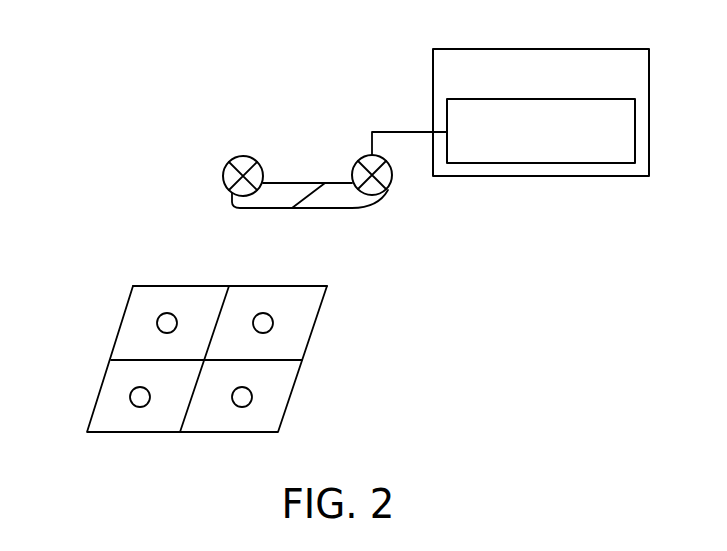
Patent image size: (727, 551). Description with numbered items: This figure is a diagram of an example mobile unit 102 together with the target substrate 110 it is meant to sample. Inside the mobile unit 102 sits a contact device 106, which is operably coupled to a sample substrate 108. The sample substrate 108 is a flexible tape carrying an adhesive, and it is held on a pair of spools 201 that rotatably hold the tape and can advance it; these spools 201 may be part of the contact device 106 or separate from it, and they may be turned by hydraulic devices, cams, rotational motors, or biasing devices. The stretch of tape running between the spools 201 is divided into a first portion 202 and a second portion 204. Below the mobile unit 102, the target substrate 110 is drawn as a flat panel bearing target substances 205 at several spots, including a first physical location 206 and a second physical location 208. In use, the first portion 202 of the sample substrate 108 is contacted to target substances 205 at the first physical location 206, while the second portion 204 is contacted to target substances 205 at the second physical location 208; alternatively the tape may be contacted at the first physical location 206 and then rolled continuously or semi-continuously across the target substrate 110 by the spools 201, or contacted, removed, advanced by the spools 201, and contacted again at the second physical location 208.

The mobile unit 102 is at (649, 83).
The contact device 106 is at (635, 146).
The sample substrate 108 is at (385, 128).
The target substrate 110 is at (310, 333).
The spools 201 is at (243, 156).
The first portion 202 is at (267, 200).
The second portion 204 is at (345, 197).
The target substances 205 is at (162, 322).
The first physical location 206 is at (165, 286).
The second physical location 208 is at (285, 286).